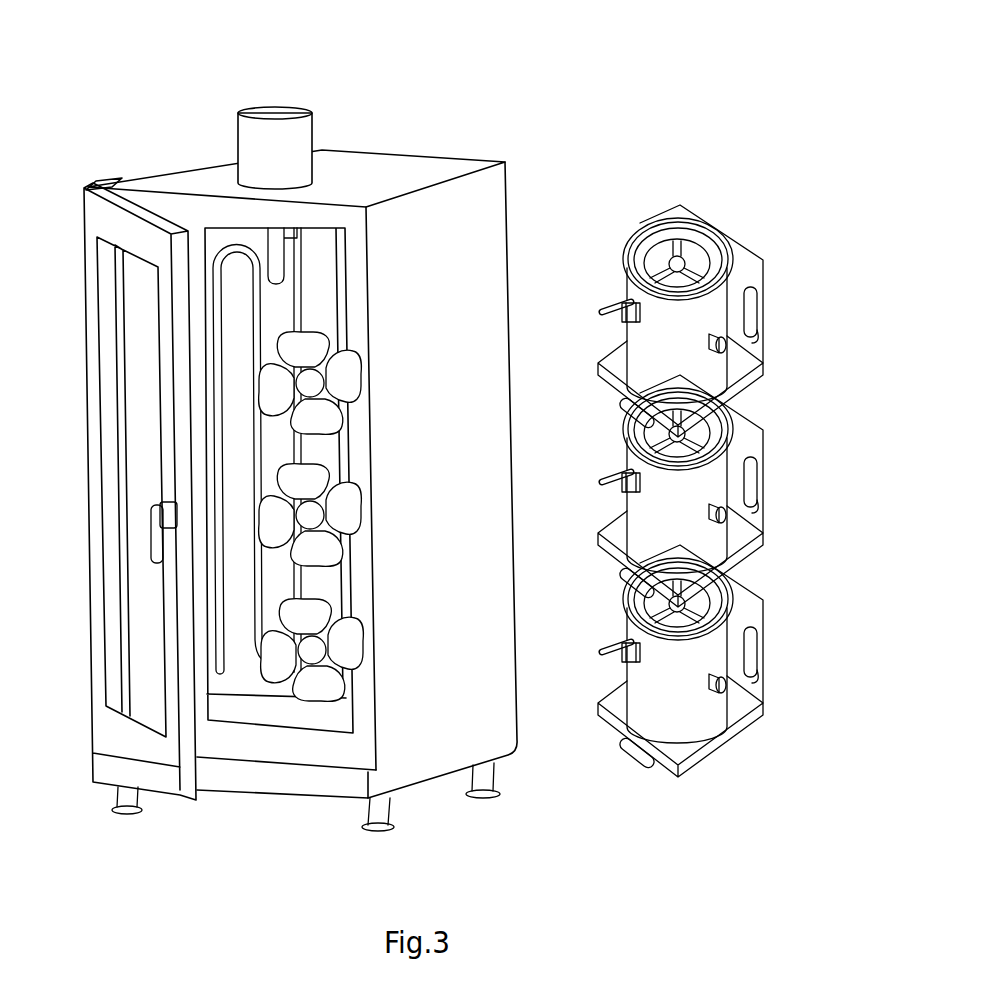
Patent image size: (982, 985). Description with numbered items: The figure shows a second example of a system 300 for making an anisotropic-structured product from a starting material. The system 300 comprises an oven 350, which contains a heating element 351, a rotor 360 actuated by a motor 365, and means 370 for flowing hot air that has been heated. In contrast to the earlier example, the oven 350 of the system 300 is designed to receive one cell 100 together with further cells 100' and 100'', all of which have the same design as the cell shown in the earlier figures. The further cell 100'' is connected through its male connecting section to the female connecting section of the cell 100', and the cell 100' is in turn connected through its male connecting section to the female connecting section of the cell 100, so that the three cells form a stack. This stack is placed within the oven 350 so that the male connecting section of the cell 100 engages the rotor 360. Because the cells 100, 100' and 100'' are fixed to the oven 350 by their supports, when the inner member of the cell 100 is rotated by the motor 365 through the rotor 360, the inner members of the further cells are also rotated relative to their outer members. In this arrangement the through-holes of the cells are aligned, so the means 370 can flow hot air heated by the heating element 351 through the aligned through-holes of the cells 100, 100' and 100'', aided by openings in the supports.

The cell 100 is at (714, 287).
The further cell 100' is at (719, 457).
The further cell 100'' is at (724, 639).
The system 300 is at (765, 420).
The oven 350 is at (457, 268).
The heating element 351 is at (213, 295).
The rotor 360 is at (272, 242).
The motor 365 is at (280, 137).
The means for flowing hot air 370 is at (310, 255).